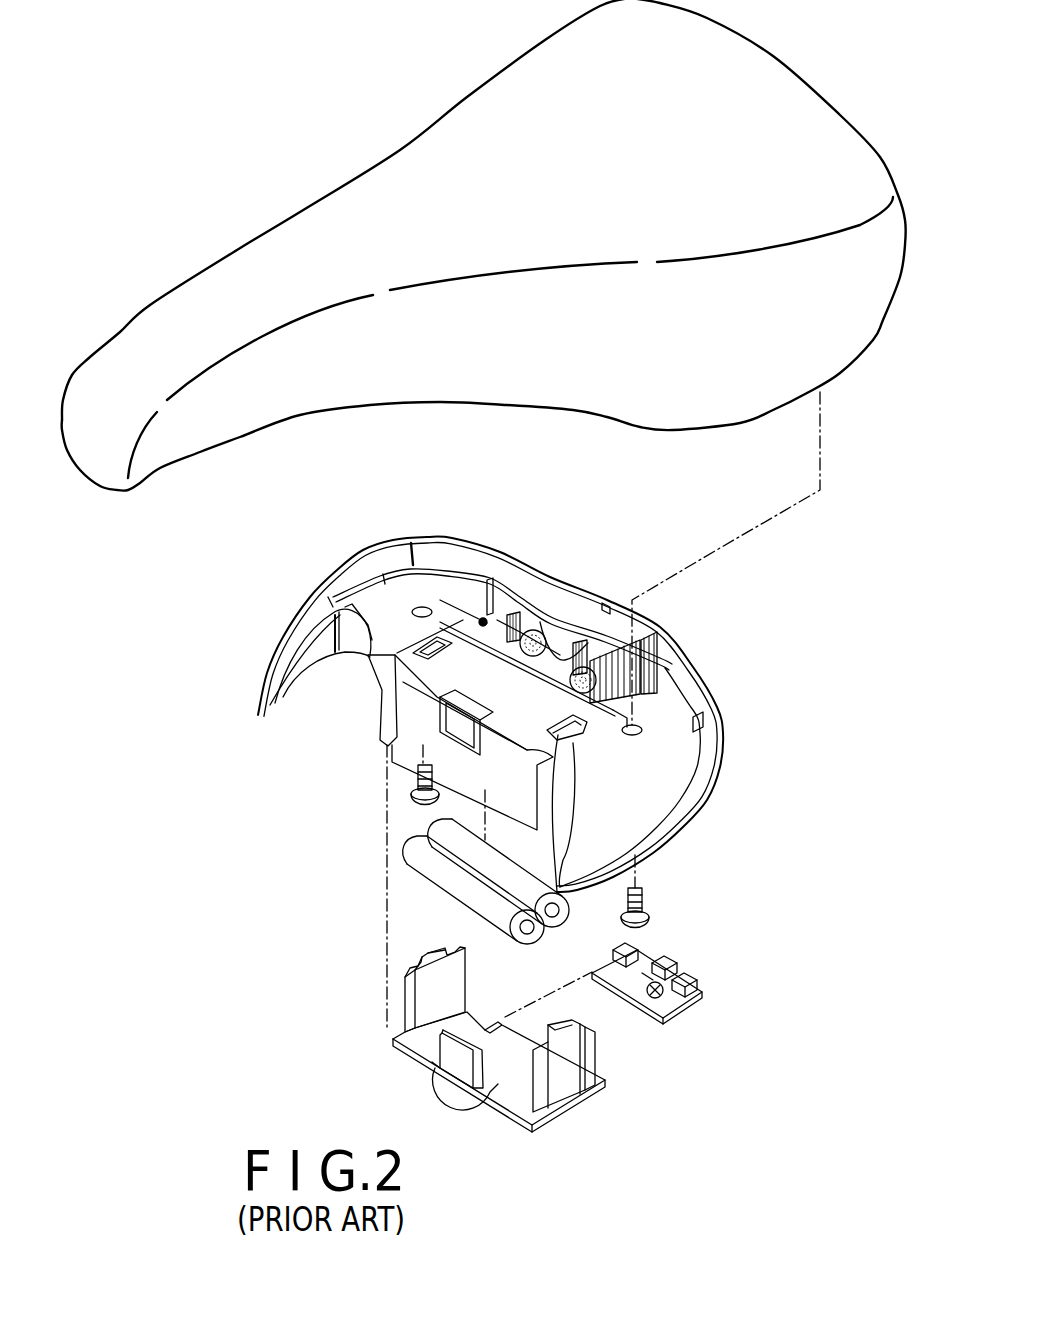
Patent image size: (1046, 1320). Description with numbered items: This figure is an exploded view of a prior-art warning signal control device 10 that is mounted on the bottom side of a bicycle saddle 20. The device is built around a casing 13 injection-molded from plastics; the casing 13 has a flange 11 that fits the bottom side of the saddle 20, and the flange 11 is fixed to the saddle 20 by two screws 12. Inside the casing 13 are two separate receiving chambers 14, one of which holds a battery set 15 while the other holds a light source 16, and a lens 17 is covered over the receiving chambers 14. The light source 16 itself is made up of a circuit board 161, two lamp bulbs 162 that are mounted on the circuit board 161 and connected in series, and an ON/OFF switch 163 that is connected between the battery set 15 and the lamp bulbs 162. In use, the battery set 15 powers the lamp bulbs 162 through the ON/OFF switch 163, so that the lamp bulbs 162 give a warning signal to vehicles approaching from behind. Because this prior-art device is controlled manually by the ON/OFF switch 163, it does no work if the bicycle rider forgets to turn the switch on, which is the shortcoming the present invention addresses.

The bicycle saddle 20 is at (284, 205).
The warning signal control device 10 is at (736, 740).
The flange 11 is at (575, 600).
The screws 12 is at (645, 894).
The casing 13 is at (387, 710).
The receiving chambers 14 is at (420, 745).
The battery set 15 is at (433, 877).
The light source 16 is at (508, 592).
The circuit board 161 is at (617, 697).
The lamp bulbs 162 is at (603, 693).
The ON/OFF switch 163 is at (660, 997).
The lens 17 is at (610, 608).